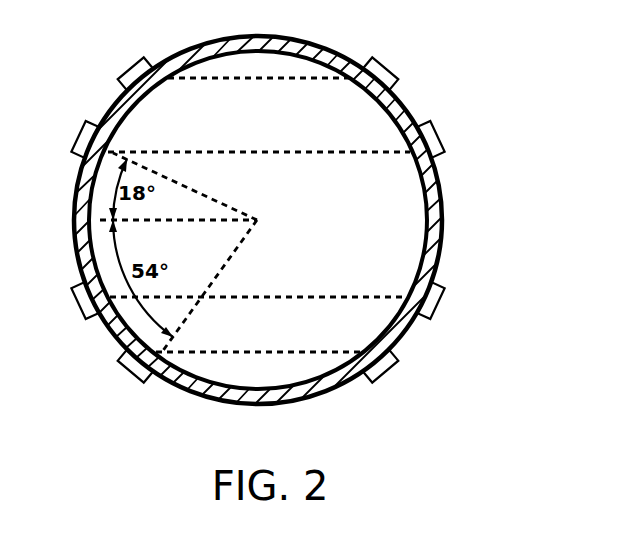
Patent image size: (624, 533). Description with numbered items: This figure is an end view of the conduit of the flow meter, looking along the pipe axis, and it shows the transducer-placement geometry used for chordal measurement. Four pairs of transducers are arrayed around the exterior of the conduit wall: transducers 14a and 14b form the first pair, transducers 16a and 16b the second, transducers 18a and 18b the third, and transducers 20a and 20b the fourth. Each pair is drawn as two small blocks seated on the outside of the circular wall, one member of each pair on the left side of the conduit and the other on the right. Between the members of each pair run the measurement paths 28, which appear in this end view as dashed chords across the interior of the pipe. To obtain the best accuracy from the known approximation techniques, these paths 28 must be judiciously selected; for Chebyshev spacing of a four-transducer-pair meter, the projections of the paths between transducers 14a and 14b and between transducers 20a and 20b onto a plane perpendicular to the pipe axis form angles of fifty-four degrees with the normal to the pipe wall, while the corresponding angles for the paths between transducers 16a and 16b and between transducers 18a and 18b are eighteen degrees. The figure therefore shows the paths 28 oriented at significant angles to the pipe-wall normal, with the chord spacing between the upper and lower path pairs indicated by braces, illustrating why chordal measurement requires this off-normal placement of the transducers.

The transducer 14a is at (140, 60).
The transducer 14b is at (396, 64).
The transducer 16a is at (80, 134).
The transducer 16b is at (448, 137).
The transducer 18a is at (82, 308).
The transducer 18b is at (447, 306).
The transducer 20a is at (136, 378).
The transducer 20b is at (392, 376).
The paths between the transducers 28 is at (264, 79).